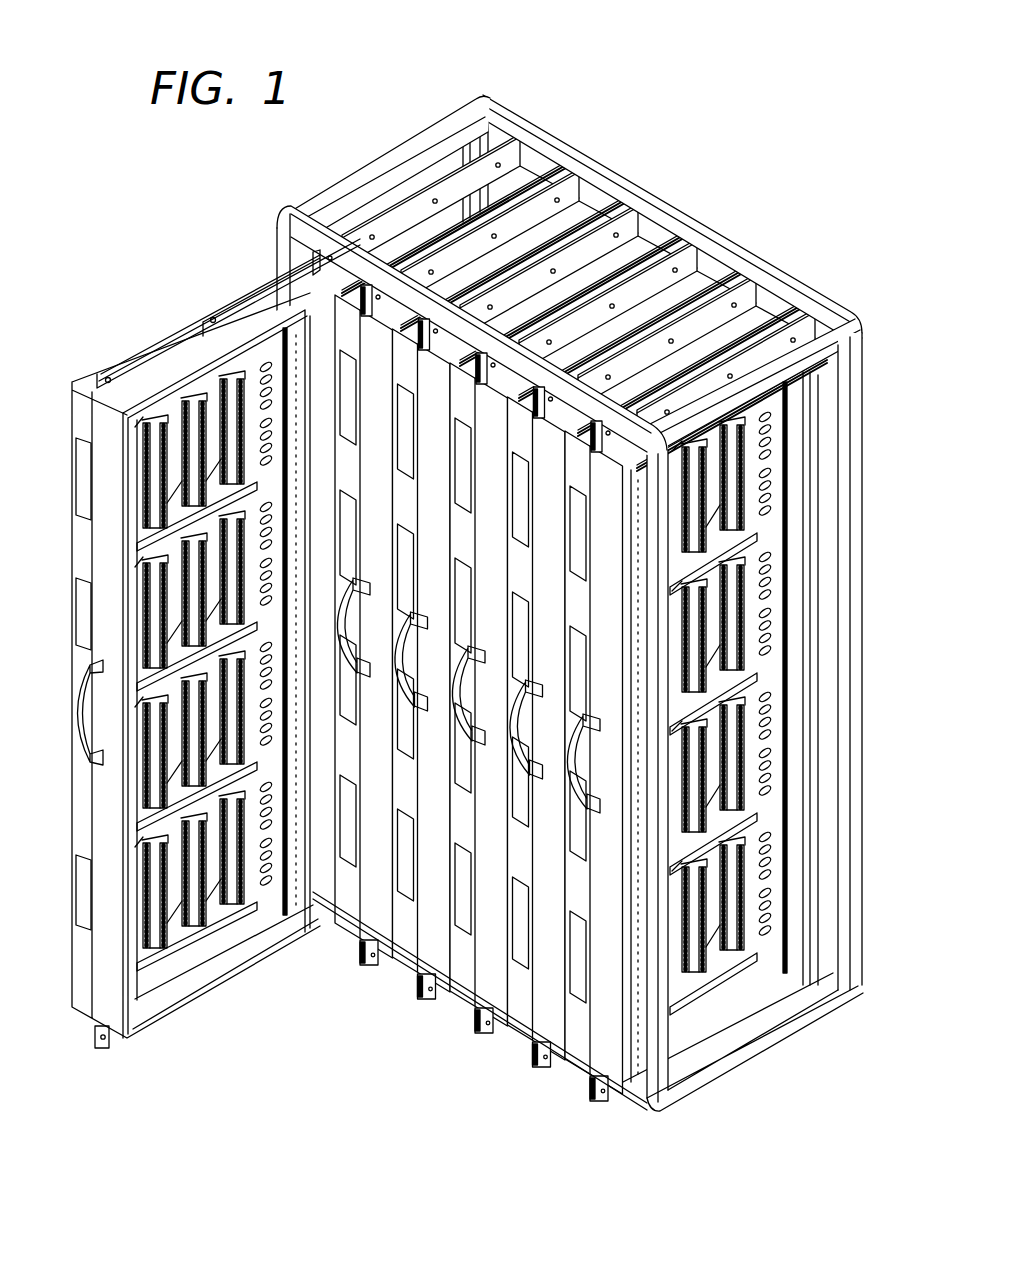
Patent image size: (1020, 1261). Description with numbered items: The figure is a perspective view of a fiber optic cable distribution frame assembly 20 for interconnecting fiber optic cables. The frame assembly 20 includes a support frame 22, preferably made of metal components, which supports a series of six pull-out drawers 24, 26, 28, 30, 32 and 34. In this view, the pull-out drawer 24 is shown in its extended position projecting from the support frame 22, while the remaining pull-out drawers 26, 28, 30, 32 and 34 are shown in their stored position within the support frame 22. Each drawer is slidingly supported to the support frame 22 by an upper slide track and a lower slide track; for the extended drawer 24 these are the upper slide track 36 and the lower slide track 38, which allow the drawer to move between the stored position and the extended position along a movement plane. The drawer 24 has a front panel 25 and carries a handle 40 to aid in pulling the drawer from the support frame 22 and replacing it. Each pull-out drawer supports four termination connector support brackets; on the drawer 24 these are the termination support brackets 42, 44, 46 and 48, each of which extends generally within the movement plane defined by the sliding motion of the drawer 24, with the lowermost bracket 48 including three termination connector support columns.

The fiber optic cable distribution frame assembly 20 is at (454, 574).
The support frame 22 is at (673, 213).
The pull-out drawer 24 is at (183, 703).
The front panel 25 is at (101, 852).
The pull-out drawer 26 is at (378, 923).
The pull-out drawer 28 is at (436, 957).
The pull-out drawer 30 is at (495, 990).
The pull-out drawer 32 is at (555, 1025).
The pull-out drawer 34 is at (615, 1058).
The upper slide track 36 is at (237, 301).
The lower slide track 38 is at (105, 1048).
The handle 40 is at (80, 722).
The termination connector support bracket 42 is at (162, 443).
The termination connector support bracket 44 is at (183, 586).
The termination connector support bracket 46 is at (182, 770).
The termination connector support bracket 48 is at (162, 922).